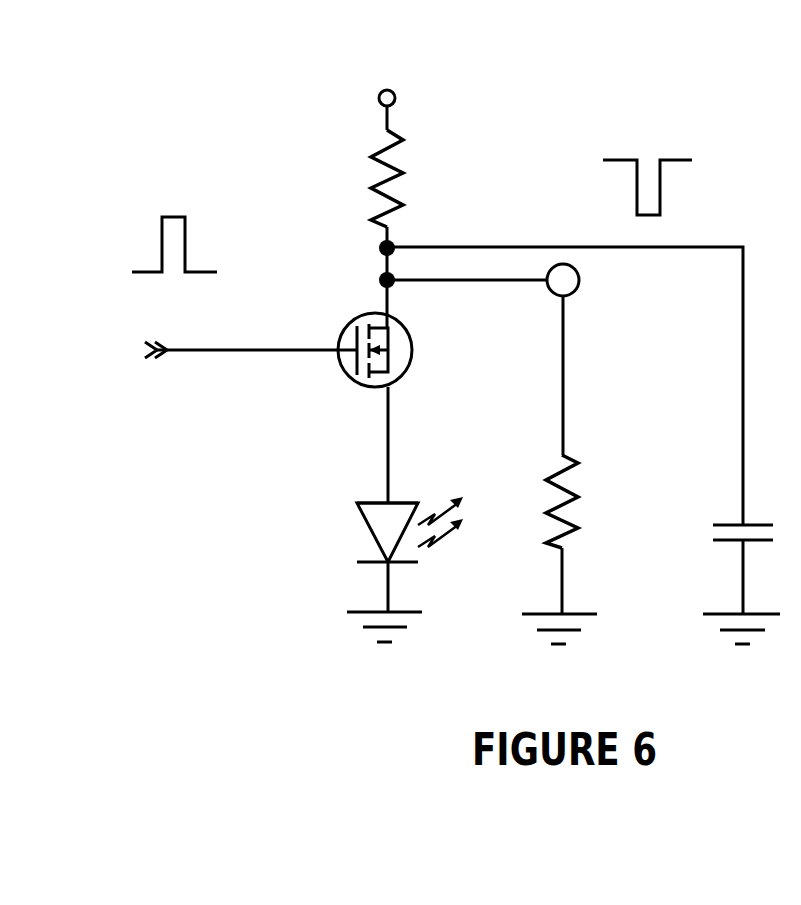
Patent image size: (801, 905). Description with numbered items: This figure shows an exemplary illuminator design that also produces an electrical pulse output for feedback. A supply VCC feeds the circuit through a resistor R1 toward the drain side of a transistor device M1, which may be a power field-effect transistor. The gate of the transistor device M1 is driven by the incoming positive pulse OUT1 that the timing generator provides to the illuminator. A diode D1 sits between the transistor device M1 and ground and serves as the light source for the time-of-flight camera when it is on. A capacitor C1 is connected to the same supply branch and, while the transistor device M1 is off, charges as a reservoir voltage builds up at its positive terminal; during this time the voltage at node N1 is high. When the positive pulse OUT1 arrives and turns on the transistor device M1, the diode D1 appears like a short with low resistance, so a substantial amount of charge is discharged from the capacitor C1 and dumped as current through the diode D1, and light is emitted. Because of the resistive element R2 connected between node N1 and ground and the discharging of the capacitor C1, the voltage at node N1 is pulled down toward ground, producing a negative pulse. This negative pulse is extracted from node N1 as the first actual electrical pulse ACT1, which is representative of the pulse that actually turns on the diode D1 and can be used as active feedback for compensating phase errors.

The supply voltage VCC is at (387, 84).
The first resistor R1 is at (360, 178).
The transistor device M1 is at (343, 393).
The incoming positive pulse OUT1 is at (244, 287).
The diode D1 is at (397, 498).
The node N1 is at (584, 359).
The first actual electrical pulse ACT1 is at (568, 264).
The resistive element R2 is at (584, 534).
The capacitor C1 is at (720, 561).